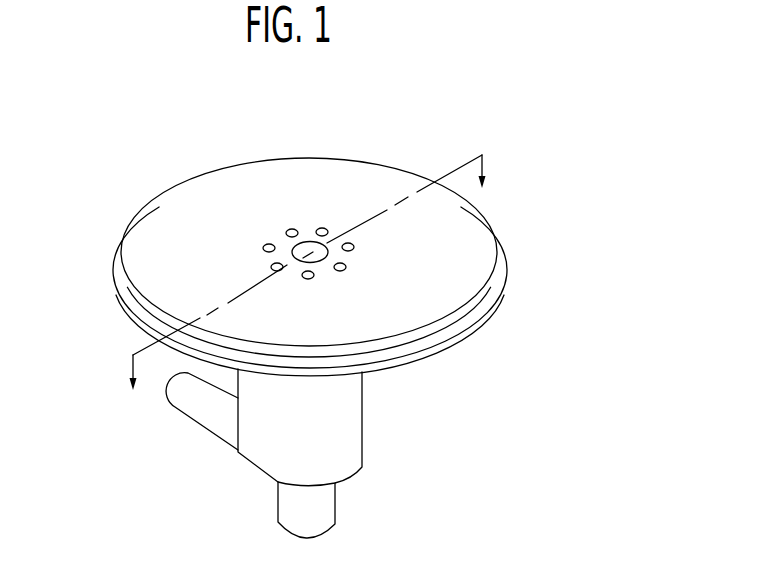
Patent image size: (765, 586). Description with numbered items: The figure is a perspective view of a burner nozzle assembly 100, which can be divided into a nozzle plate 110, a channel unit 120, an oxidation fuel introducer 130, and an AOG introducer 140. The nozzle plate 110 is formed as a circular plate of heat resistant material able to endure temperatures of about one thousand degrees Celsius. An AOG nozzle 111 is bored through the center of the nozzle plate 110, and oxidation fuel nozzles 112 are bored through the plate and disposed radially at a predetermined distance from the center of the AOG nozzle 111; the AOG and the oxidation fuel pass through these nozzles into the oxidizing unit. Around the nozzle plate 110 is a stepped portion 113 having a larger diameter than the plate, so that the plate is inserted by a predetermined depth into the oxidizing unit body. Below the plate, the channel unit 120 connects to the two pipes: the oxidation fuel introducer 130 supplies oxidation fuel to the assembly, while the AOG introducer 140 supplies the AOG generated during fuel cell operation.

The burner nozzle assembly 100 is at (168, 159).
The nozzle plate 110 is at (480, 238).
The AOG nozzle 111 is at (305, 244).
The oxidation fuel nozzles 112 is at (343, 268).
The stepped portion 113 is at (145, 313).
The channel unit 120 is at (350, 424).
The oxidation fuel introducer 130 is at (217, 417).
The AOG introducer 140 is at (317, 508).